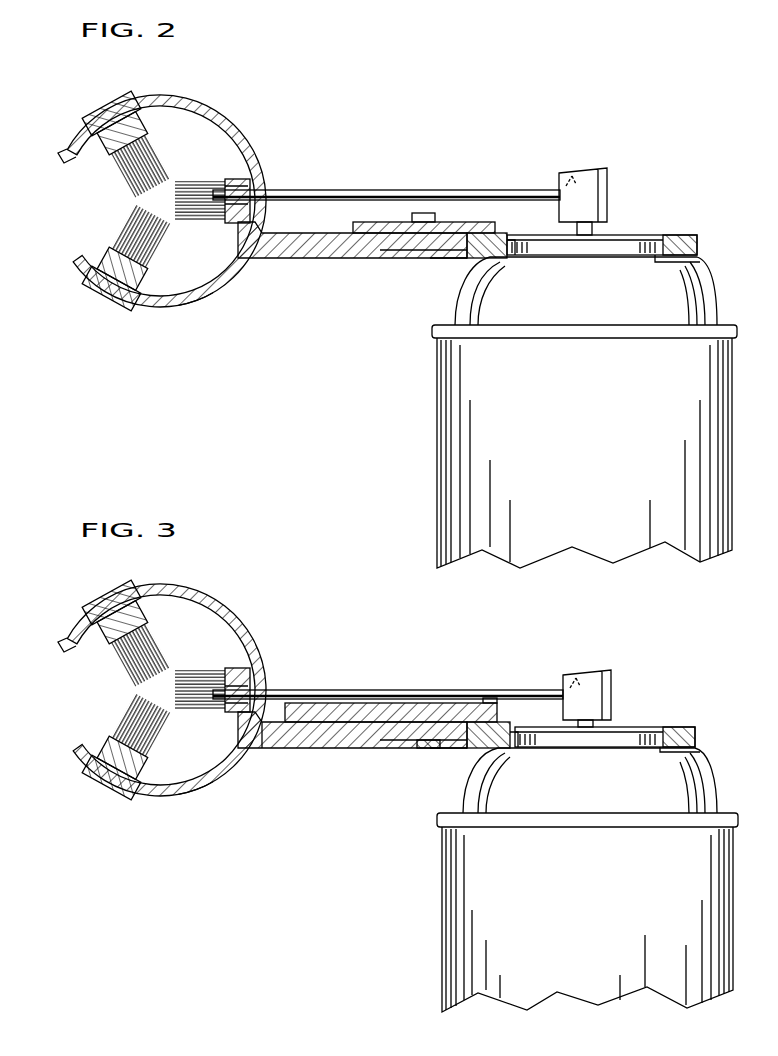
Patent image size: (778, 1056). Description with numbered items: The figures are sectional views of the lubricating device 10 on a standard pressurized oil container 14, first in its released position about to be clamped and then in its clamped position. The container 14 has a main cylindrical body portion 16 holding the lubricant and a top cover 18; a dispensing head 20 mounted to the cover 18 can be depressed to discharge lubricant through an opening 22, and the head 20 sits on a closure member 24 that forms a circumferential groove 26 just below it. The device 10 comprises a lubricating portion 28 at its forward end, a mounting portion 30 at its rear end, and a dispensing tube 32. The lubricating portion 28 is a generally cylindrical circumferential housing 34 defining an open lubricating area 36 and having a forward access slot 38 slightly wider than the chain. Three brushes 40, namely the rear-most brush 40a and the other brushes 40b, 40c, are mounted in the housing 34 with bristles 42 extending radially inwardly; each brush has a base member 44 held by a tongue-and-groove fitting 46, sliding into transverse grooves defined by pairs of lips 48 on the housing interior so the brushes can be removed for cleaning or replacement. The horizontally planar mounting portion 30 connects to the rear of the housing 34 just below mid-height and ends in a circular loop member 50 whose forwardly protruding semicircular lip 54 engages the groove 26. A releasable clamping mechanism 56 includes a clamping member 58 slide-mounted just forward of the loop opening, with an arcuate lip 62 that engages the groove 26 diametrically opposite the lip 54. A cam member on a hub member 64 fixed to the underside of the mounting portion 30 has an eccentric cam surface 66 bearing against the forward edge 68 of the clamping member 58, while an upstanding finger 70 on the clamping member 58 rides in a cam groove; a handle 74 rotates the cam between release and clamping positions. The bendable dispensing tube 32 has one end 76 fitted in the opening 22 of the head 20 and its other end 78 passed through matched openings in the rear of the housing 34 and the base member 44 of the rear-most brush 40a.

In FIG. 2, the lubricating device 10 is at (432, 123).
In FIG. 3, the lubricating device 10 is at (355, 650).
In FIG. 2, the pressurized oil container 14 is at (547, 412).
In FIG. 3, the pressurized oil container 14 is at (558, 880).
In FIG. 2, the main cylindrical body portion 16 is at (445, 432).
In FIG. 3, the main cylindrical body portion 16 is at (587, 919).
In FIG. 2, the top cover 18 is at (440, 328).
In FIG. 3, the top cover 18 is at (450, 815).
In FIG. 2, the dispensing head 20 is at (612, 190).
In FIG. 3, the dispensing head 20 is at (615, 690).
In FIG. 2, the opening 22 is at (580, 173).
In FIG. 3, the opening 22 is at (580, 673).
In FIG. 2, the closure member 24 is at (630, 235).
In FIG. 3, the closure member 24 is at (630, 727).
In FIG. 2, the circumferential groove 26 is at (655, 262).
In FIG. 3, the circumferential groove 26 is at (700, 752).
In FIG. 2, the lubricating portion 28 is at (216, 94).
In FIG. 3, the lubricating portion 28 is at (216, 583).
In FIG. 2, the mounting portion 30 is at (430, 262).
In FIG. 3, the mounting portion 30 is at (463, 703).
In FIG. 2, the dispensing tube 32 is at (455, 190).
In FIG. 3, the dispensing tube 32 is at (445, 690).
In FIG. 2, the circumferential housing 34 is at (222, 290).
In FIG. 3, the circumferential housing 34 is at (222, 779).
In FIG. 2, the open lubricating area 36 is at (140, 200).
In FIG. 3, the open lubricating area 36 is at (140, 689).
In FIG. 2, the forward access slot 38 is at (66, 153).
In FIG. 3, the forward access slot 38 is at (66, 642).
In FIG. 2, the brushes 40 is at (197, 205).
In FIG. 3, the brushes 40 is at (204, 696).
In FIG. 2, the rear-most brush 40a is at (248, 176).
In FIG. 3, the rear-most brush 40a is at (248, 665).
In FIG. 2, the second brush 40b is at (152, 112).
In FIG. 3, the second brush 40b is at (152, 601).
In FIG. 2, the third brush 40c is at (113, 300).
In FIG. 3, the third brush 40c is at (113, 789).
In FIG. 2, the bristles 42 is at (157, 163).
In FIG. 3, the bristles 42 is at (157, 652).
In FIG. 2, the base member 44 is at (118, 116).
In FIG. 3, the base member 44 is at (118, 605).
In FIG. 2, the tongue-and-groove fitting 46 is at (93, 140).
In FIG. 3, the tongue-and-groove fitting 46 is at (93, 629).
In FIG. 2, the lips 48 is at (80, 250).
In FIG. 3, the lips 48 is at (80, 739).
In FIG. 2, the circular loop member 50 is at (697, 238).
In FIG. 3, the circular loop member 50 is at (695, 730).
In FIG. 2, the semicircular lip 54 is at (700, 282).
In FIG. 3, the semicircular lip 54 is at (590, 780).
In FIG. 2, the releasable clamping mechanism 56 is at (468, 220).
In FIG. 3, the releasable clamping mechanism 56 is at (425, 703).
In FIG. 2, the clamping member 58 is at (488, 272).
In FIG. 3, the clamping member 58 is at (500, 755).
In FIG. 2, the arcuate lip 62 is at (510, 262).
In FIG. 3, the arcuate lip 62 is at (525, 752).
In FIG. 2, the hub member 64 is at (418, 258).
In FIG. 3, the hub member 64 is at (410, 750).
In FIG. 2, the eccentric cam surface 66 is at (455, 265).
In FIG. 3, the eccentric cam surface 66 is at (470, 752).
In FIG. 3, the clamping member forward edge 68 is at (430, 750).
In FIG. 2, the upstanding finger 70 is at (474, 212).
In FIG. 3, the upstanding finger 70 is at (487, 698).
In FIG. 3, the handle 74 is at (280, 748).
In FIG. 2, the tube end 76 is at (542, 178).
In FIG. 3, the tube end 76 is at (548, 680).
In FIG. 2, the other tube end 78 is at (255, 195).
In FIG. 3, the other tube end 78 is at (255, 690).